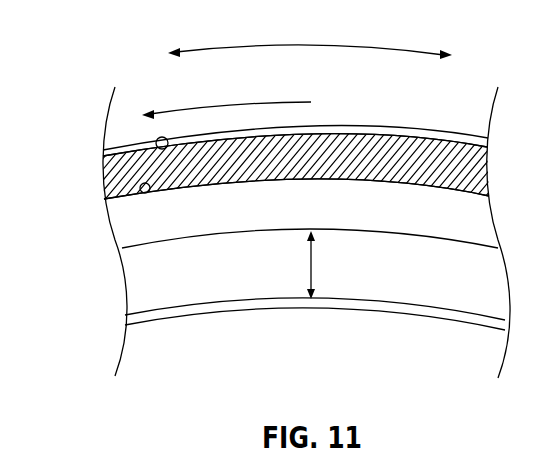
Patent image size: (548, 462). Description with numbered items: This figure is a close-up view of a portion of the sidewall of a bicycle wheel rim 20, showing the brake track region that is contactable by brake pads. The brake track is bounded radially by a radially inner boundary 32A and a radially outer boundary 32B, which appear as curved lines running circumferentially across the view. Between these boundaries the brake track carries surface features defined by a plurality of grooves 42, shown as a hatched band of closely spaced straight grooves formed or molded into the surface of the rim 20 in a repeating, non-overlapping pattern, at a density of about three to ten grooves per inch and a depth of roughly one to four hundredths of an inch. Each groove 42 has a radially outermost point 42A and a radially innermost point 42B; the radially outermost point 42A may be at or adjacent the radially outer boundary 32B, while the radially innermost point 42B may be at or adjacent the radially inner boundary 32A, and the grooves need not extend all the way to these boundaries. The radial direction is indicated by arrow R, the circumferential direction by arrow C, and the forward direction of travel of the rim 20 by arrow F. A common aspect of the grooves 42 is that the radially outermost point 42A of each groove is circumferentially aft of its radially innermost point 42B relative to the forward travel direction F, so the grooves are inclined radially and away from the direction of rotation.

The wheel rim 20 is at (241, 336).
The radially inner boundary 32A is at (462, 196).
The radially outer boundary 32B is at (380, 134).
The grooves 42 is at (276, 168).
The radially outermost point 42A is at (158, 139).
The radially innermost point 42B is at (148, 194).
The radial direction R is at (308, 254).
The circumferential direction C is at (311, 44).
The forward direction of travel F is at (233, 103).